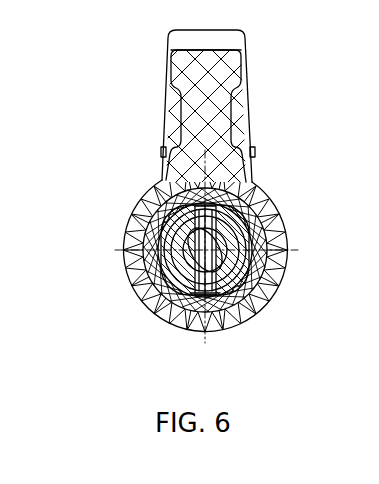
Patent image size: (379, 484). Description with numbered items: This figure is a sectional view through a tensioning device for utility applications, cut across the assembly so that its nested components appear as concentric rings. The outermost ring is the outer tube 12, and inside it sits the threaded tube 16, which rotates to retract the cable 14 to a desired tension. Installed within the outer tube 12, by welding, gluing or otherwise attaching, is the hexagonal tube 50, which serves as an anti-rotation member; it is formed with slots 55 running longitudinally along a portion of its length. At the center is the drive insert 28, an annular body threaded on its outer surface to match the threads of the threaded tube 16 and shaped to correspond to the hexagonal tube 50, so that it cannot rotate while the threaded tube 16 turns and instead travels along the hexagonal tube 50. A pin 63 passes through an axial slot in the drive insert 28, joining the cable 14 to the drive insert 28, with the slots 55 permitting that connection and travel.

The outer tube 12 is at (250, 168).
The cable 14 is at (192, 250).
The threaded tube 16 is at (246, 250).
The drive insert 28 is at (240, 271).
The hexagonal tube 50 is at (230, 228).
The slots 55 is at (204, 214).
The pin 63 is at (206, 281).